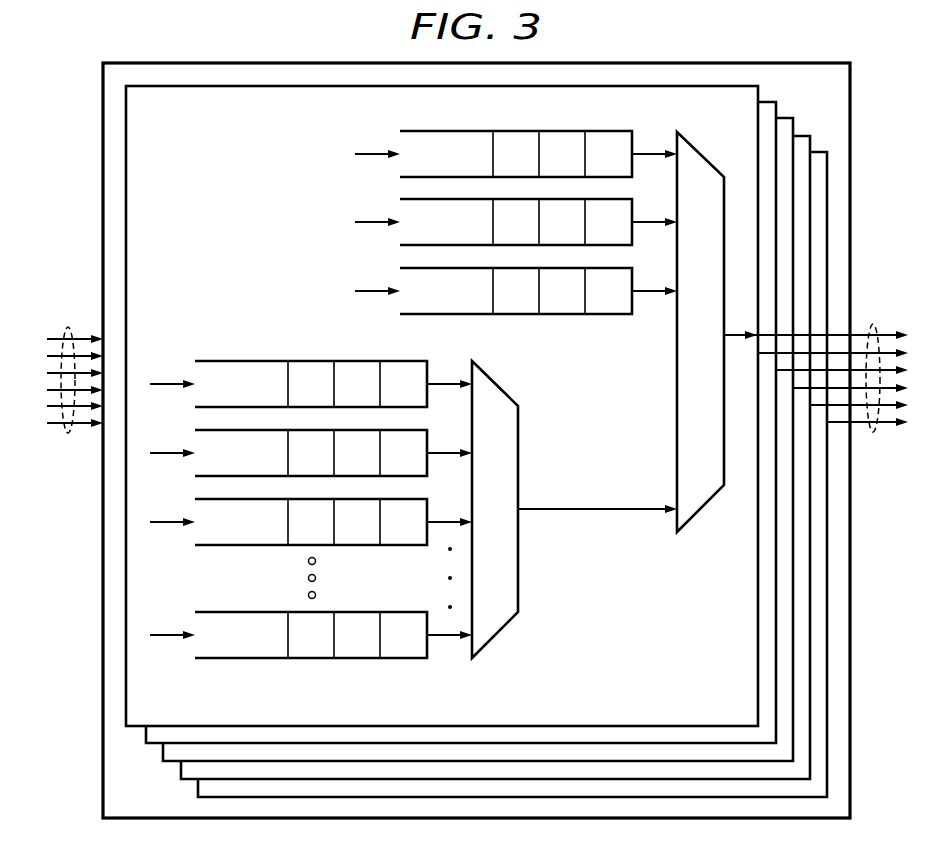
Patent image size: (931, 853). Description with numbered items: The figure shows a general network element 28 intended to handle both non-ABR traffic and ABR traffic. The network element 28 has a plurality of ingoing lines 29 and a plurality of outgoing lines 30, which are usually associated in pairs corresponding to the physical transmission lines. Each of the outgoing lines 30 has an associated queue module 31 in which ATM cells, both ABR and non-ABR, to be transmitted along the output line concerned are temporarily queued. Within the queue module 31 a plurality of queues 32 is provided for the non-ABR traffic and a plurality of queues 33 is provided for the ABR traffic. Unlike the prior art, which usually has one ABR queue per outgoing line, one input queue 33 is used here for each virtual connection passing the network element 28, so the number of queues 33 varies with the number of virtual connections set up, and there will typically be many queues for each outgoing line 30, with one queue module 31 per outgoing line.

The network element 28 is at (268, 62).
The ingoing lines 29 is at (68, 433).
The outgoing lines 30 is at (873, 432).
The queue module 31 is at (760, 93).
The queues for non-ABR traffic 32 is at (515, 316).
The queues for ABR traffic 33 is at (312, 660).